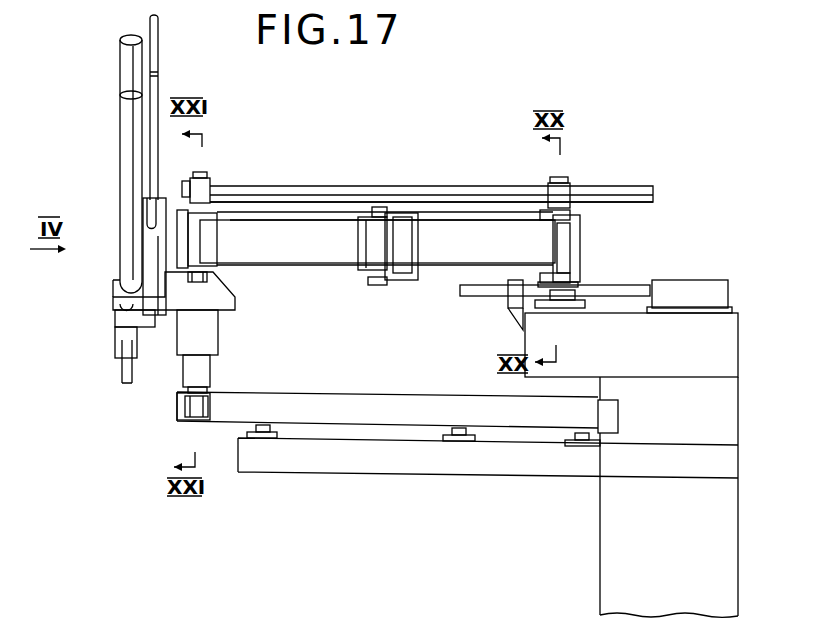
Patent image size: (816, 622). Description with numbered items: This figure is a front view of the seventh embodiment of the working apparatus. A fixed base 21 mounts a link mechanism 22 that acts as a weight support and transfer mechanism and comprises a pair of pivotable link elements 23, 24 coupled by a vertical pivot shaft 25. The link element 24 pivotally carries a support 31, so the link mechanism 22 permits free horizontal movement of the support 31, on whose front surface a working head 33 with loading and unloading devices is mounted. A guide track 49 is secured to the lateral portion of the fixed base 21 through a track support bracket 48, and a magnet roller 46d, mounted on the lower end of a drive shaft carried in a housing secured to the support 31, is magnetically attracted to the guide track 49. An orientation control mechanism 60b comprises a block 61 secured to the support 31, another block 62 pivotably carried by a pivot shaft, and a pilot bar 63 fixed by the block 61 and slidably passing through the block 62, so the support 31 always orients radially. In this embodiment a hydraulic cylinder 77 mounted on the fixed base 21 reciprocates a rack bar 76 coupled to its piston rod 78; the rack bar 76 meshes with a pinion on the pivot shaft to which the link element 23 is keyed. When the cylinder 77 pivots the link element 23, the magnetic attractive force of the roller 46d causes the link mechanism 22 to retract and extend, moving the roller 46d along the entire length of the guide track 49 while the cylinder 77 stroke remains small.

The fixed base 21 is at (723, 535).
The link mechanism 22 is at (421, 283).
The link element 23 is at (445, 266).
The link element 24 is at (303, 258).
The pivot shaft 25 is at (381, 207).
The support 31 is at (160, 263).
The working head 33 is at (100, 180).
The magnet roller 46d is at (188, 407).
The track support bracket 48 is at (358, 467).
The guide track 49 is at (320, 418).
The orientation control mechanism 60b is at (329, 177).
The block 61 is at (204, 186).
The block 62 is at (568, 195).
The pilot bar 63 is at (282, 185).
The rack bar 76 is at (489, 296).
The hydraulic cylinder 77 is at (695, 287).
The piston rod 78 is at (640, 290).